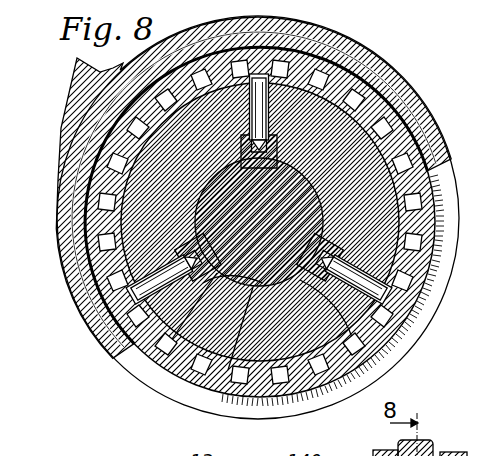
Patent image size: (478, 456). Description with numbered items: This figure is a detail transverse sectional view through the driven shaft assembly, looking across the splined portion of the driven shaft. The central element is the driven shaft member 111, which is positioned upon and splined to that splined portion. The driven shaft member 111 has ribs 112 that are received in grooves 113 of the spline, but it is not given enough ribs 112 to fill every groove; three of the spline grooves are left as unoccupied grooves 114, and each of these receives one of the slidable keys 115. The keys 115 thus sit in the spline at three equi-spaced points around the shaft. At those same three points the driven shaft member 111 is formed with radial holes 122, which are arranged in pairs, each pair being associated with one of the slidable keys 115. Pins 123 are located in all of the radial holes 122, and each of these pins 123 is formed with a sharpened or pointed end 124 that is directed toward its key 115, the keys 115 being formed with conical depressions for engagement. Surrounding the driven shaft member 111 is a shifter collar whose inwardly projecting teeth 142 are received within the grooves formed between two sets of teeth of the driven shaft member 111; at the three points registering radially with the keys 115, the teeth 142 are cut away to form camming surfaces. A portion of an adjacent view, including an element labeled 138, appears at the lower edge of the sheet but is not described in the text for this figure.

The driven shaft member 111 is at (230, 409).
The ribs 112 is at (193, 393).
The grooves 113 is at (157, 359).
The unoccupied grooves 114 is at (378, 354).
The slidable keys 115 is at (397, 329).
The radial holes 122 is at (272, 123).
The pins 123 is at (262, 112).
The pointed ends 124 is at (272, 75).
The bearing cap 138 is at (402, 448).
The inwardly projecting teeth 142 is at (350, 376).